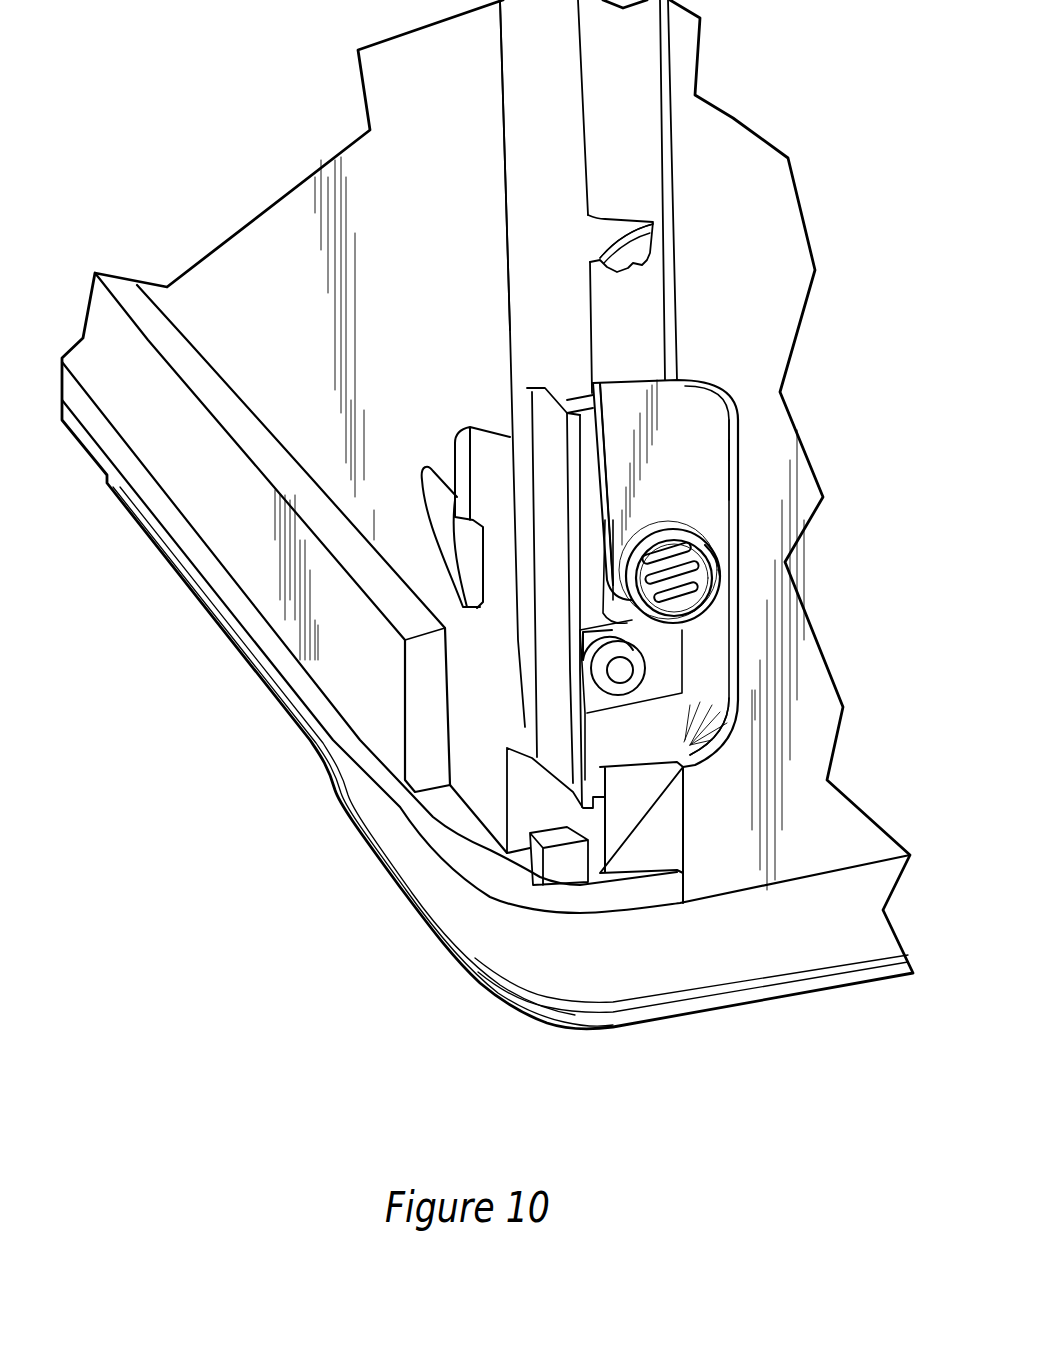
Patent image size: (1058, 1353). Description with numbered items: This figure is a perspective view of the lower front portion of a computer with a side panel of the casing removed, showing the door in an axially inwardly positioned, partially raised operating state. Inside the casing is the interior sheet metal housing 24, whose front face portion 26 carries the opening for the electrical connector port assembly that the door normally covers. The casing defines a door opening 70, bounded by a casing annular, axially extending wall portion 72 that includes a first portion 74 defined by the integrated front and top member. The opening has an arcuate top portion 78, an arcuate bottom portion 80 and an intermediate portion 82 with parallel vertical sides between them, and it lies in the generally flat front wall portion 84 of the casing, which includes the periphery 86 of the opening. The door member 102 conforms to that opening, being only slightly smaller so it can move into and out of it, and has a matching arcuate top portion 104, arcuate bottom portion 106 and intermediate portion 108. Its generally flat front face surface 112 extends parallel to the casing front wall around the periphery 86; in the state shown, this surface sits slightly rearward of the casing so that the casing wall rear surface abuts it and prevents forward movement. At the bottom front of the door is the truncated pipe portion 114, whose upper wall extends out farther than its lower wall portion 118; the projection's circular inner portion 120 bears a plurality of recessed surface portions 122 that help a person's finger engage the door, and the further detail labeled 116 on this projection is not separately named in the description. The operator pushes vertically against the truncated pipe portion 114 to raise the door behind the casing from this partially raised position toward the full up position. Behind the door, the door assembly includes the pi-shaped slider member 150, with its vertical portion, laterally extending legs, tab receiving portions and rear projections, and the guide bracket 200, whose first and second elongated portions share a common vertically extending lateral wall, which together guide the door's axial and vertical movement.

The interior sheet metal housing 24 is at (487, 514).
The front face portion 26 is at (525, 228).
The door opening 70 is at (692, 737).
The casing annular axially extending wall portion 72 is at (705, 693).
The first portion 74 is at (733, 655).
The arcuate top portion 78 is at (690, 392).
The arcuate bottom portion 80 is at (685, 762).
The intermediate portion 82 is at (707, 502).
The front wall portion 84 is at (763, 560).
The periphery 86 is at (755, 703).
The door member 102 is at (700, 418).
The arcuate top portion 104 is at (634, 265).
The arcuate bottom portion 106 is at (684, 533).
The intermediate portion 108 is at (703, 448).
The front face surface 112 is at (623, 413).
The truncated pipe portion 114 is at (720, 548).
The vent grille 116 is at (655, 528).
The lower wall portion 118 is at (670, 630).
The circular inner portion 120 is at (617, 570).
The recessed surface portions 122 is at (597, 648).
The slider member 150 is at (602, 236).
The guide bracket 200 is at (645, 248).